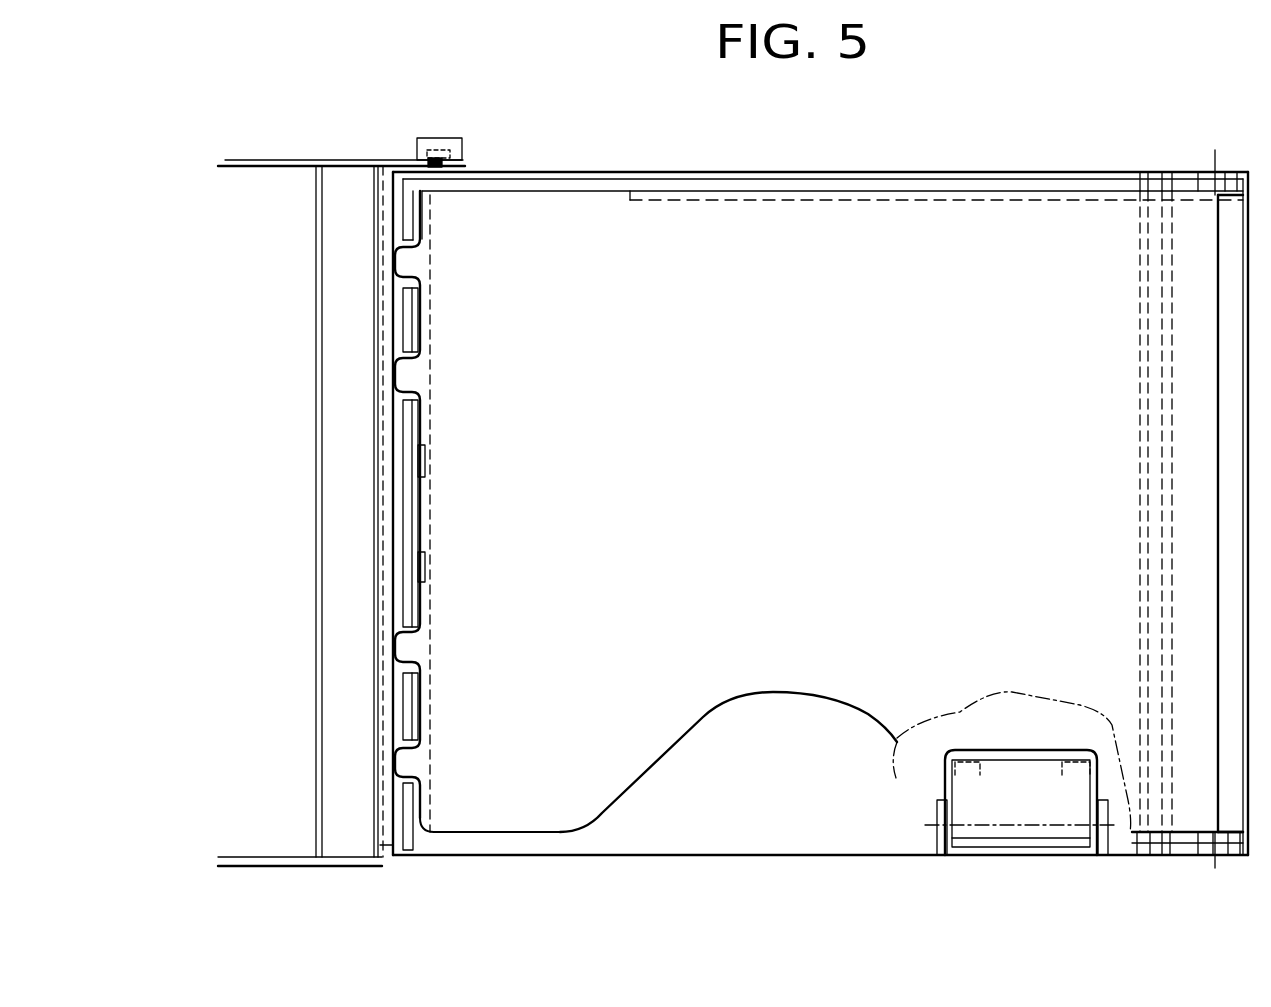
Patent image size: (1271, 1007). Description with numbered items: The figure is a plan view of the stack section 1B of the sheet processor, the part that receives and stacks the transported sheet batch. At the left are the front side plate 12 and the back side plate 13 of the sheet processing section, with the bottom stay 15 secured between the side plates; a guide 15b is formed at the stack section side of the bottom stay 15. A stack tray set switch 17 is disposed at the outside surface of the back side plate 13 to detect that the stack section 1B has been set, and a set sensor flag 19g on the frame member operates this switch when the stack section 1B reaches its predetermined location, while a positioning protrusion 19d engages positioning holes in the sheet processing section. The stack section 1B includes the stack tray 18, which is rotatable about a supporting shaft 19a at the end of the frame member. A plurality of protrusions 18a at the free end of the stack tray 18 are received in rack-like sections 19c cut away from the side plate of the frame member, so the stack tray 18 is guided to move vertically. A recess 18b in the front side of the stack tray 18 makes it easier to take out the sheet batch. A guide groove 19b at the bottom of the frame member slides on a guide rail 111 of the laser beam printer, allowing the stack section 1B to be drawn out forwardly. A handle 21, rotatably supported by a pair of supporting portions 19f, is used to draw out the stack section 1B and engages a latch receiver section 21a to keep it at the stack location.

The stack section 1B is at (846, 167).
The front side plate 12 is at (268, 868).
The back side plate 13 is at (268, 159).
The bottom stay 15 is at (345, 178).
The guide 15b is at (385, 826).
The stack tray set switch 17 is at (427, 137).
The stack tray 18 is at (727, 366).
The protrusions 18a is at (410, 258).
The recess 18b is at (768, 693).
The supporting shaft 19a is at (1206, 165).
The guide groove 19b is at (1140, 297).
The rack-like sections 19c is at (393, 243).
The protrusion 19d is at (437, 172).
The supporting portions 19f is at (925, 822).
The set sensor flag 19g is at (445, 153).
The handle 21 is at (1022, 812).
The latch receiver section 21a is at (966, 742).
The guide rail 111 is at (1155, 366).